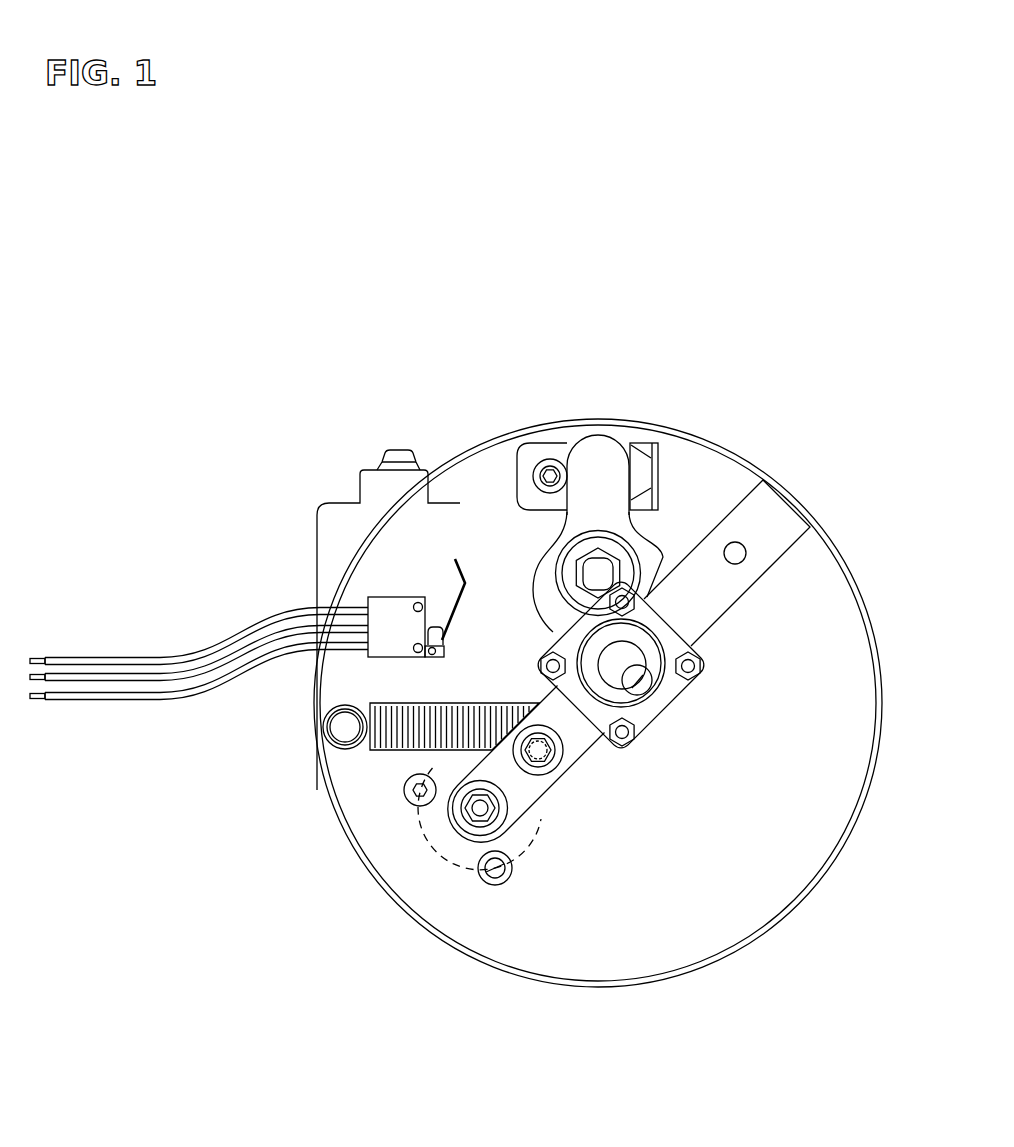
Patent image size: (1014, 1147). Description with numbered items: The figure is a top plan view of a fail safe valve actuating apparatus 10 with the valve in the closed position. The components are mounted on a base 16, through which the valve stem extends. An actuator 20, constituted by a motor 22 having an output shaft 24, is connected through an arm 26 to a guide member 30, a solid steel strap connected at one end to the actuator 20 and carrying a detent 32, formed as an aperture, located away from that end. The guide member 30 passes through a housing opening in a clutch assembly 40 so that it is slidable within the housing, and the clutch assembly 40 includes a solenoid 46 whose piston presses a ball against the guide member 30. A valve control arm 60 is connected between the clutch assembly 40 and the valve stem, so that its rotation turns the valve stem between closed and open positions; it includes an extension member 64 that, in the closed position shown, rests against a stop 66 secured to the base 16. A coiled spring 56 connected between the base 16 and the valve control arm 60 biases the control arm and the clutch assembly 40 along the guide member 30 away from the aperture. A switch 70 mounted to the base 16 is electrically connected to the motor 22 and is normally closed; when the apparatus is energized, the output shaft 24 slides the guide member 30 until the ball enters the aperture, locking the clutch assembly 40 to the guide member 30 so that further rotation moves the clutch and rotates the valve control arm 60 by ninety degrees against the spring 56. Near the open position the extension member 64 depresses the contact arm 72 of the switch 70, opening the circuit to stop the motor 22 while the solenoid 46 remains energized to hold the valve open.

The fail safe valve actuating apparatus 10 is at (768, 446).
The base 16 is at (488, 457).
The actuator 20 is at (440, 845).
The motor 22 is at (349, 500).
The output shaft 24 is at (493, 810).
The arm 26 is at (460, 757).
The guide member 30 is at (722, 604).
The detent 32 is at (737, 542).
The clutch assembly 40 is at (681, 705).
The solenoid 46 is at (610, 695).
The spring 56 is at (393, 703).
The valve control arm 60 is at (547, 562).
The extension member 64 is at (594, 452).
The stop 66 is at (660, 458).
The switch 70 is at (372, 595).
The contact arm 72 is at (445, 571).